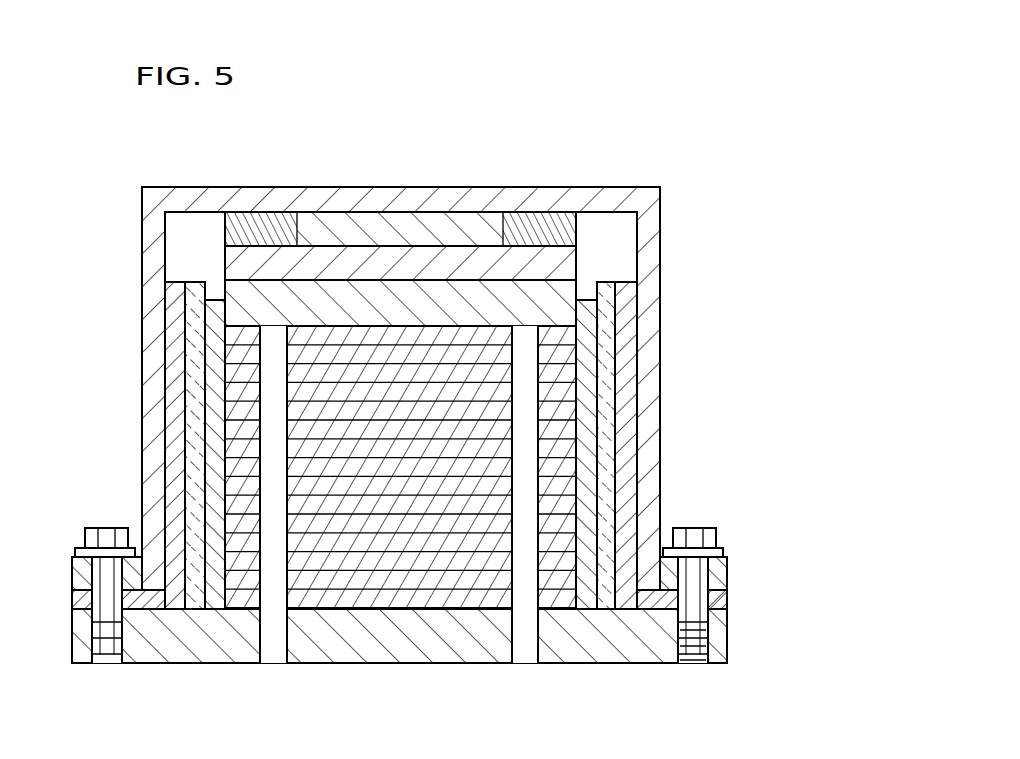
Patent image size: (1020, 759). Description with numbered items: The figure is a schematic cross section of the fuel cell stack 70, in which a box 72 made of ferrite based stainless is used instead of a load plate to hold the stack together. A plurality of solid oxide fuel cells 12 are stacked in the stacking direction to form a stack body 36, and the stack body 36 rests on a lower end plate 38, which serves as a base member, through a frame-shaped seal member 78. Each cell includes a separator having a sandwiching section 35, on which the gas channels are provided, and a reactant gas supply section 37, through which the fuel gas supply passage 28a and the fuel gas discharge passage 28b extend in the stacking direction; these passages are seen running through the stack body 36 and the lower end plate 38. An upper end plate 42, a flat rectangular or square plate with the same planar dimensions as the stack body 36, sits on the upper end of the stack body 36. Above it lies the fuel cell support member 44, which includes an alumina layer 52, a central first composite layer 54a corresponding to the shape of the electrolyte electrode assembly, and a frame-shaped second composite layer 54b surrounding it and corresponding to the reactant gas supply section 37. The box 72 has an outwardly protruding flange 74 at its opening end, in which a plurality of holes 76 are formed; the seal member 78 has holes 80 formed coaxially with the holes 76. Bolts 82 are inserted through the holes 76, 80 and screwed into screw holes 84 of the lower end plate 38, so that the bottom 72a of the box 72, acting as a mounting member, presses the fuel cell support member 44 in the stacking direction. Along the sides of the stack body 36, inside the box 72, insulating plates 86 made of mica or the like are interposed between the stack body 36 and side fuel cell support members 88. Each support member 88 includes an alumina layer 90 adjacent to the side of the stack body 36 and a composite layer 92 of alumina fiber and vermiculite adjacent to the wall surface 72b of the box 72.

The fuel cell stack 70 is at (292, 123).
The box 72 is at (237, 185).
The bottom of the box 72a is at (394, 215).
The wall surface of the box 72b is at (648, 348).
The sandwiching section 35 is at (350, 336).
The fuel cell support member 44 is at (797, 155).
The first composite layer 54a is at (490, 190).
The second composite layer 54b is at (560, 230).
The alumina layer 52 is at (553, 268).
The upper end plate 42 is at (560, 313).
The solid oxide fuel cell 12 is at (563, 413).
The stack body 36 is at (723, 392).
The reactant gas supply section 37 is at (243, 338).
The fuel cell support member 88 is at (82, 343).
The composite layer 92 is at (172, 365).
The alumina layer 90 is at (190, 395).
The insulating plate 86 is at (210, 442).
The fuel gas supply passage 28a is at (287, 635).
The fuel gas discharge passage 28b is at (538, 635).
The lower end plate 38 is at (623, 665).
The bolt 82 is at (688, 530).
The hole 76 is at (697, 566).
The flange 74 is at (722, 577).
The hole 80 is at (678, 598).
The seal member 78 is at (725, 607).
The screw hole 84 is at (687, 645).